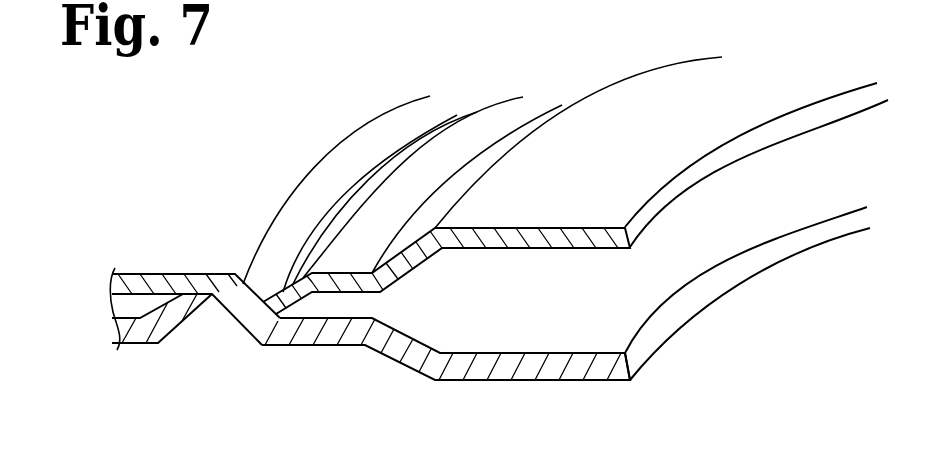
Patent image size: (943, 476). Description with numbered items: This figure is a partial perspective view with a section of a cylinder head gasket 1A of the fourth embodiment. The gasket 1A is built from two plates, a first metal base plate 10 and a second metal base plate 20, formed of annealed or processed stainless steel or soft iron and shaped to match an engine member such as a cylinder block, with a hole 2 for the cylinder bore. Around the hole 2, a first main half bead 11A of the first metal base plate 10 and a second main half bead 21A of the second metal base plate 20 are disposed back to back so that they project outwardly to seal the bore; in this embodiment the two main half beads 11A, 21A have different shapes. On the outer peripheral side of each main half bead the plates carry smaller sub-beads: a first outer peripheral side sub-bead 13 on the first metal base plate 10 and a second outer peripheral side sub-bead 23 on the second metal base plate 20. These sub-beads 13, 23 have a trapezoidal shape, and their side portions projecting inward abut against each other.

The cylinder head gasket 1A is at (499, 230).
The first metal base plate 10 is at (732, 149).
The first main half bead 11A is at (534, 228).
The first outer peripheral side sub-bead 13 is at (278, 297).
The second metal base plate 20 is at (738, 270).
The second main half bead 21A is at (531, 379).
The second outer peripheral side sub-bead 23 is at (205, 322).
The hole for cylinder bore 2 is at (700, 384).